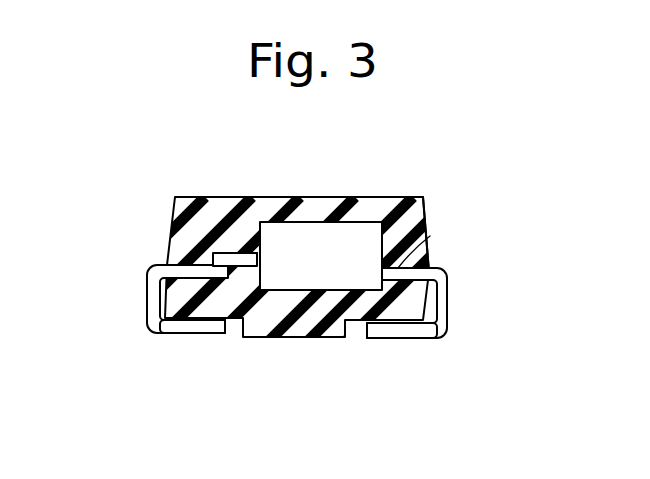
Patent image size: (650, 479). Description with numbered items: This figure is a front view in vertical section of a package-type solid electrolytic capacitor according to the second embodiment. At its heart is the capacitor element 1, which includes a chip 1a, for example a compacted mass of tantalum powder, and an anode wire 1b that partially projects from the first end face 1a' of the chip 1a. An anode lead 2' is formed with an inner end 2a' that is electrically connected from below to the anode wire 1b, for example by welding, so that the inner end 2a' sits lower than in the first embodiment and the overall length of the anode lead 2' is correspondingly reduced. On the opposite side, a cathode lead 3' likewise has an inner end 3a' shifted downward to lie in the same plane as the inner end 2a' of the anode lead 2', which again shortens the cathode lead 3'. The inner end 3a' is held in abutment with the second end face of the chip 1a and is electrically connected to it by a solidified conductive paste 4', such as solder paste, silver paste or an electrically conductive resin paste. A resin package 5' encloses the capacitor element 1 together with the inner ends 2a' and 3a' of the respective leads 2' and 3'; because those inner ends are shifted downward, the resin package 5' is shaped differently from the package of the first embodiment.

The resin package 5' is at (267, 248).
The capacitor element 1 is at (356, 196).
The chip 1a is at (322, 209).
The first end face 1a' is at (263, 194).
The anode wire 1b is at (238, 254).
The anode lead 2' is at (156, 330).
The inner end of anode lead 2a' is at (198, 333).
The cathode lead 3' is at (451, 318).
The inner end of cathode lead 3a' is at (402, 328).
The conductive paste 4' is at (441, 218).